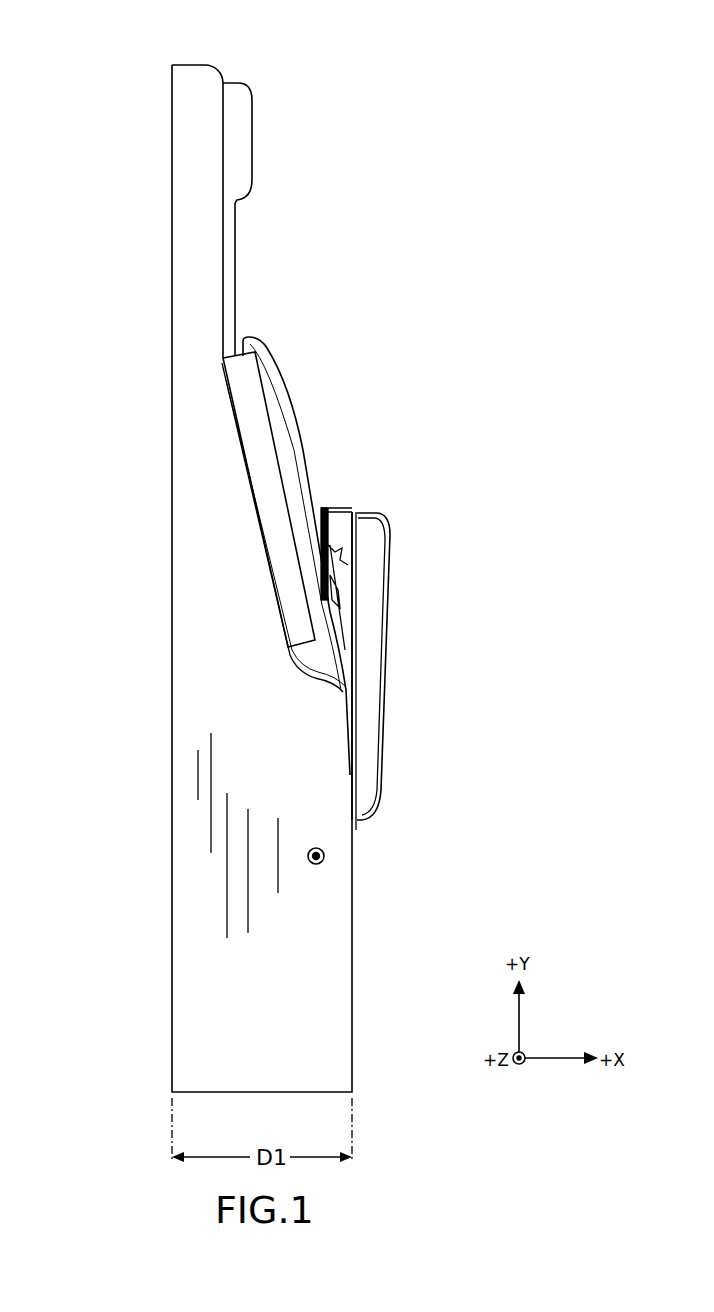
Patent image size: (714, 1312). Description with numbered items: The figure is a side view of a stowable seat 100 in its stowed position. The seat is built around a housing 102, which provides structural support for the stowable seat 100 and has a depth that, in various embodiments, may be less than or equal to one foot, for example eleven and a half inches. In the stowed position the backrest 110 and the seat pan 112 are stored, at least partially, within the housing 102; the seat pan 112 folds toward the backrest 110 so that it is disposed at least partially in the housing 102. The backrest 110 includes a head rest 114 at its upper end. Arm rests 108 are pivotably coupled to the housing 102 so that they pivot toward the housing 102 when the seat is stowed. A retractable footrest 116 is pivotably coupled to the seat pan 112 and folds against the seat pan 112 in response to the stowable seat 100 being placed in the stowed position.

The stowable seat 100 is at (138, 72).
The housing 102 is at (292, 748).
The arm rests 108 is at (278, 408).
The backrest 110 is at (230, 268).
The seat pan 112 is at (332, 517).
The head rest 114 is at (236, 161).
The retractable footrest 116 is at (385, 555).